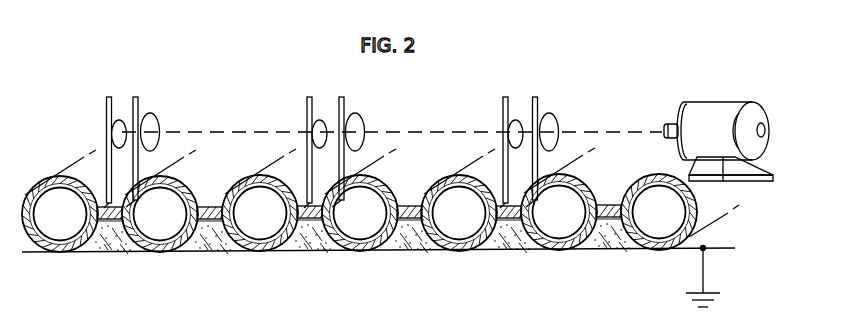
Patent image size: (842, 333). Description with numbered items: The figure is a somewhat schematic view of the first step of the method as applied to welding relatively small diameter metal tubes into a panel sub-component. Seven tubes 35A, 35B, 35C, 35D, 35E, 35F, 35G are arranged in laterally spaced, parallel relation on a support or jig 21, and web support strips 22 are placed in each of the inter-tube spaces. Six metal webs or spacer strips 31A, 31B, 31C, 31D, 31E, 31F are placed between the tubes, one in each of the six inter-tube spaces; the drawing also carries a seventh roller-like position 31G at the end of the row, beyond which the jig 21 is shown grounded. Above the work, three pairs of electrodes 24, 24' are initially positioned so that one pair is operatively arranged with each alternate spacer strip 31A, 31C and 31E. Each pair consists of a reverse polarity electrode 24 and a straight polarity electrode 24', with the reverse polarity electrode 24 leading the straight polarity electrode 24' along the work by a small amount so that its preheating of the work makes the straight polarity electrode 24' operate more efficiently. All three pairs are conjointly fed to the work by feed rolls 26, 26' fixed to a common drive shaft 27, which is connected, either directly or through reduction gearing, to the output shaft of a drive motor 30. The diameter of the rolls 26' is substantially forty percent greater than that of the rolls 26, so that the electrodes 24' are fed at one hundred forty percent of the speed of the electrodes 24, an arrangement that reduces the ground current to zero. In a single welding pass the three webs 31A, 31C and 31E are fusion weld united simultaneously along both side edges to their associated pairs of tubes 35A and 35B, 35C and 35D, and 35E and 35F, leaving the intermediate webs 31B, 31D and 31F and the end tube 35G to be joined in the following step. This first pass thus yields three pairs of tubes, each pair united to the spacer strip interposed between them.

The support or jig 21 is at (718, 252).
The web support strips 22 is at (113, 243).
The reverse polarity electrodes 24 is at (294, 140).
The straight polarity electrodes 24' is at (349, 140).
The feed rolls 26 is at (299, 125).
The feed rolls 26' is at (367, 124).
The common drive shaft 27 is at (620, 132).
The drive motor 30 is at (721, 112).
The metal web or spacer strip 31A is at (100, 213).
The metal web or spacer strip 31B is at (200, 213).
The metal web or spacer strip 31C is at (300, 212).
The metal web or spacer strip 31D is at (400, 212).
The metal web or spacer strip 31E is at (499, 212).
The metal web or spacer strip 31F is at (599, 211).
The roller 31G is at (680, 212).
The metal tube 35A is at (36, 252).
The metal tube 35B is at (160, 252).
The metal tube 35C is at (260, 251).
The metal tube 35D is at (360, 251).
The metal tube 35E is at (459, 251).
The metal tube 35F is at (559, 250).
The metal tube 35G is at (667, 250).